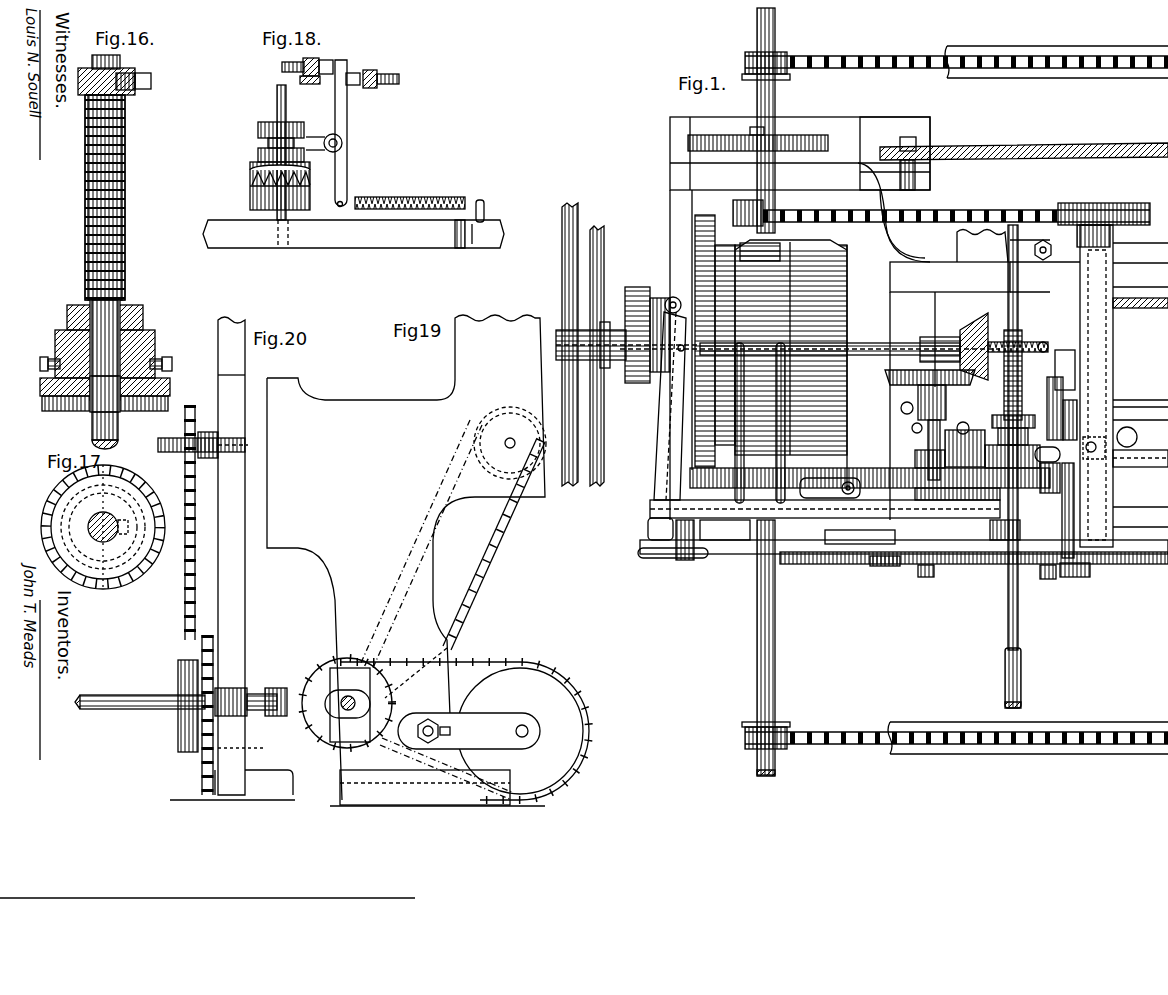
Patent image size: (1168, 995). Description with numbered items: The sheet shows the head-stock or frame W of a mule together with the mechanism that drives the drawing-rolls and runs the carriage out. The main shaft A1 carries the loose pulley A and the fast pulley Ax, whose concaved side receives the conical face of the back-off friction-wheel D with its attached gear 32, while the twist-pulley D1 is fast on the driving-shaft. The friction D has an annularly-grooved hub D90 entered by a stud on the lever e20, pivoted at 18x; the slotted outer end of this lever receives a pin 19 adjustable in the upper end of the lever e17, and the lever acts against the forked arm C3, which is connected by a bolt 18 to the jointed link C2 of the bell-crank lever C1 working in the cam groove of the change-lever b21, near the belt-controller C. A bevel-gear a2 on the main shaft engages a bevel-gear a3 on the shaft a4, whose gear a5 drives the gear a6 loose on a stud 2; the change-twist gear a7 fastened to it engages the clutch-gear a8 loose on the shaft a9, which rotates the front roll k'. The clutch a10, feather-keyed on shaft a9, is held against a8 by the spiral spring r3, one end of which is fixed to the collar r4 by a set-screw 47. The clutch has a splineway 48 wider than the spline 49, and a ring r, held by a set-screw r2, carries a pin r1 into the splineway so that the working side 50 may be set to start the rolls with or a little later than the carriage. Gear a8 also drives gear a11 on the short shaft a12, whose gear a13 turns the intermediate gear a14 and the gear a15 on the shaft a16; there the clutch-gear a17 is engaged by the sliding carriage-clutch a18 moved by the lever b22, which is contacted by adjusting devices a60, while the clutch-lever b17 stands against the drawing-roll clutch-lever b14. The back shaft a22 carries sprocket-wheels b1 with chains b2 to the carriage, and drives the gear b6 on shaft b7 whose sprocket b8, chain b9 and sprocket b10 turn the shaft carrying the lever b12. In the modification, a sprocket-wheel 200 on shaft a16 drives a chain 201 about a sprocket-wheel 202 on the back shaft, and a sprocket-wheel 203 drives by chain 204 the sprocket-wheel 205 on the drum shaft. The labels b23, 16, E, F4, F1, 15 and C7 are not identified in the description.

In FIG. 16, the shaft a9 is at (122, 60).
In FIG. 17, the shaft a9 is at (92, 540).
In FIG. 1, the shaft a9 is at (1018, 632).
In FIG. 16, the set-screw 47 is at (151, 80).
In FIG. 16, the collar r4 is at (125, 88).
In FIG. 16, the spiral spring r3 is at (125, 240).
In FIG. 1, the spiral spring r3 is at (1016, 385).
In FIG. 16, the ring r is at (62, 342).
In FIG. 16, the set-screw r2 is at (40, 364).
In FIG. 16, the pin r1 is at (172, 364).
In FIG. 16, the drawing-roll clutch a10 is at (168, 390).
In FIG. 17, the drawing-roll clutch a10 is at (138, 493).
In FIG. 20, the drawing-roll clutch a10 is at (183, 462).
In FIG. 1, the drawing-roll clutch a10 is at (1078, 412).
In FIG. 18, the adjusting device a60 is at (282, 67).
In FIG. 18, the stop nut b23 is at (311, 58).
In FIG. 18, the shaft a16 is at (277, 100).
In FIG. 20, the shaft a16 is at (158, 445).
In FIG. 19, the shaft a16 is at (512, 440).
In FIG. 1, the shaft a16 is at (926, 577).
In FIG. 18, the clutch-lever b17 is at (308, 85).
In FIG. 18, the sliding carriage-clutch a18 is at (258, 155).
In FIG. 1, the sliding carriage-clutch a18 is at (928, 470).
In FIG. 18, the pivot 16 is at (342, 143).
In FIG. 18, the lever b22 is at (347, 178).
In FIG. 18, the clutch-gear a17 is at (252, 195).
In FIG. 17, the splineway 48 is at (92, 520).
In FIG. 17, the spline 49 is at (118, 540).
In FIG. 17, the working side of splineway 50 is at (116, 547).
In FIG. 20, the frame or head-stock W is at (232, 558).
In FIG. 19, the frame or head-stock W is at (406, 560).
In FIG. 1, the frame or head-stock W is at (670, 176).
In FIG. 20, the sprocket-wheel 200 is at (184, 425).
In FIG. 19, the sprocket-wheel 200 is at (503, 478).
In FIG. 20, the chain 201 is at (200, 660).
In FIG. 19, the chain 201 is at (480, 565).
In FIG. 20, the sprocket-wheel 202 is at (178, 738).
In FIG. 19, the sprocket-wheel 202 is at (346, 660).
In FIG. 20, the sprocket-wheel 203 is at (222, 700).
In FIG. 19, the sprocket-wheel 203 is at (330, 688).
In FIG. 19, the sprocket-chain 204 is at (491, 660).
In FIG. 19, the sprocket-wheel 205 is at (552, 690).
In FIG. 20, the back shaft a22 is at (150, 697).
In FIG. 1, the back shaft a22 is at (757, 675).
In FIG. 1, the sprocket-wheel b1 is at (757, 50).
In FIG. 1, the sprocket-chain b2 is at (895, 57).
In FIG. 1, the shaft b7 is at (752, 128).
In FIG. 1, the gear b6 is at (808, 135).
In FIG. 1, the sprocket-wheel b8 is at (733, 206).
In FIG. 1, the gear 32 is at (715, 248).
In FIG. 1, the back-off friction-wheel D is at (705, 268).
In FIG. 1, the pivot 18x is at (668, 298).
In FIG. 1, the twist-pulley D1 is at (562, 262).
In FIG. 1, the shaft E is at (622, 383).
In FIG. 1, the annularly-grooved hub D90 is at (666, 385).
In FIG. 1, the lever e20 is at (662, 460).
In FIG. 1, the arm C3 is at (650, 506).
In FIG. 1, the pin 19 is at (650, 535).
In FIG. 1, the belt-controller C is at (732, 545).
In FIG. 1, the lever e17 is at (730, 565).
In FIG. 1, the fast pulley Ax is at (783, 258).
In FIG. 1, the loose pulley A is at (799, 365).
In FIG. 1, the main shaft A1 is at (878, 345).
In FIG. 1, the bevel-gear a2 is at (962, 330).
In FIG. 1, the bracket F4 is at (985, 300).
In FIG. 1, the chain b9 is at (958, 210).
In FIG. 1, the sprocket-wheel b10 is at (1080, 205).
In FIG. 1, the frame plate F1 is at (1147, 309).
In FIG. 1, the change-lever b21 is at (1070, 395).
In FIG. 1, the drawing-roll clutch-lever b14 is at (1000, 400).
In FIG. 1, the gear 15 is at (1047, 400).
In FIG. 1, the stud 2 is at (975, 466).
In FIG. 1, the bevel-gear a3 is at (890, 380).
In FIG. 1, the shaft a4 is at (928, 440).
In FIG. 1, the gear a6 is at (958, 500).
In FIG. 1, the change-twist gear a7 is at (1000, 500).
In FIG. 1, the clutch-gear a8 is at (1048, 494).
In FIG. 1, the gear a11 is at (1070, 475).
In FIG. 1, the lever b12 is at (1137, 436).
In FIG. 1, the cam C7 is at (1058, 455).
In FIG. 1, the bell-crank lever C1 is at (1096, 450).
In FIG. 1, the bolt 18 is at (846, 496).
In FIG. 1, the jointed link C2 is at (856, 546).
In FIG. 1, the gear a5 is at (876, 566).
In FIG. 1, the gear a15 is at (900, 566).
In FIG. 1, the intermediate gear a14 is at (1000, 565).
In FIG. 1, the short shaft a12 is at (1062, 572).
In FIG. 1, the gear a13 is at (1088, 562).
In FIG. 1, the front roll k' is at (1025, 678).